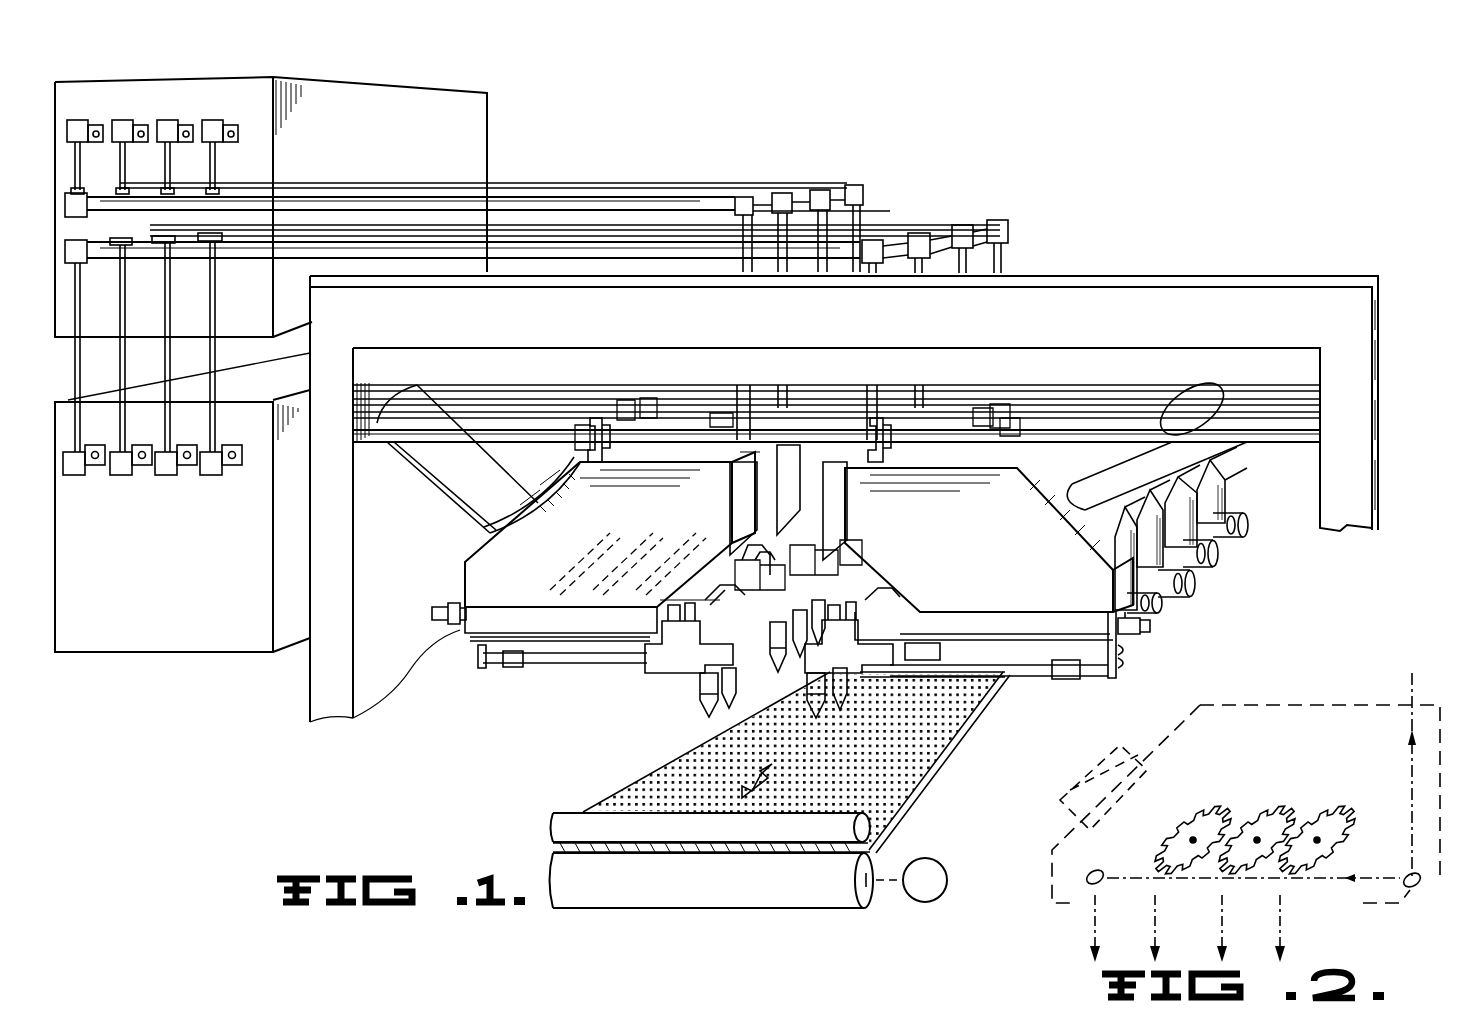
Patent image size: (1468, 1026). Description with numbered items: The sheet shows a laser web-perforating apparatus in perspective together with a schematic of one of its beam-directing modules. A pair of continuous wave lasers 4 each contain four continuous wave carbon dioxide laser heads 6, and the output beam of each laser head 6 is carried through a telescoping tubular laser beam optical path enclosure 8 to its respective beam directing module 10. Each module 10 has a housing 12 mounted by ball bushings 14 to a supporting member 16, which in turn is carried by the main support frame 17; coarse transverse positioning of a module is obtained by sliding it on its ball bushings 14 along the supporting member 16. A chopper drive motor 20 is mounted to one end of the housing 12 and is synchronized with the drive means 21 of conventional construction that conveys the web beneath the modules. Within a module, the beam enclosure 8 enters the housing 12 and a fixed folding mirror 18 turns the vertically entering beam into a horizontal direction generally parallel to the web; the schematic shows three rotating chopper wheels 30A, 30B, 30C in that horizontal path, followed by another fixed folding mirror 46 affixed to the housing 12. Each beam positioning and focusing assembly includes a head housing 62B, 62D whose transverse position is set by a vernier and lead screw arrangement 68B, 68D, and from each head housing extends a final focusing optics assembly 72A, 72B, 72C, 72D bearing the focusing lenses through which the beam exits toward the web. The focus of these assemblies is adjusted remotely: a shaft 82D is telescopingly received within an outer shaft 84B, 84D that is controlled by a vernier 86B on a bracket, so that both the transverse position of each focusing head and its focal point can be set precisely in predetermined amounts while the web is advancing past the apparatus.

In FIG. 1, the continuous wave laser 4 is at (482, 123).
In FIG. 1, the continuous wave CO2 laser head 6 is at (115, 123).
In FIG. 1, the telescoping tubular laser beam optical path enclosure 8 is at (213, 171).
In FIG. 1, the main support frame 17 is at (1193, 290).
In FIG. 1, the ball bushings 14 is at (574, 427).
In FIG. 1, the chopper drive motor 20 is at (440, 473).
In FIG. 1, the supporting member 16 is at (668, 435).
In FIG. 1, the beam directing module 10 is at (478, 548).
In FIG. 2, the beam directing module 10 is at (1293, 703).
In FIG. 1, the housing 12 is at (470, 580).
In FIG. 1, the vernier and lead screw arrangement 68D is at (432, 618).
In FIG. 1, the vernier and lead screw arrangement 68B is at (1150, 628).
In FIG. 1, the vernier 86B is at (1122, 667).
In FIG. 1, the outer shaft 84B is at (1097, 677).
In FIG. 1, the outer shaft 84D is at (481, 670).
In FIG. 1, the shaft 82D is at (547, 668).
In FIG. 1, the housing 62D is at (650, 673).
In FIG. 1, the housing 62B is at (873, 677).
In FIG. 1, the final focusing optics assembly 72D is at (700, 700).
In FIG. 1, the final focusing optics assembly 72C is at (720, 710).
In FIG. 1, the final focusing optics assembly 72A is at (738, 700).
In FIG. 1, the final focusing optics assembly 72B is at (737, 703).
In FIG. 1, the drive means 21 is at (887, 862).
In FIG. 2, the cutting blade 30C is at (1200, 813).
In FIG. 2, the cutting blade 30B is at (1280, 810).
In FIG. 2, the cutting blade 30A is at (1352, 810).
In FIG. 2, the fixed folding mirror 46 is at (1086, 875).
In FIG. 2, the fixed folding mirror 18 is at (1412, 888).